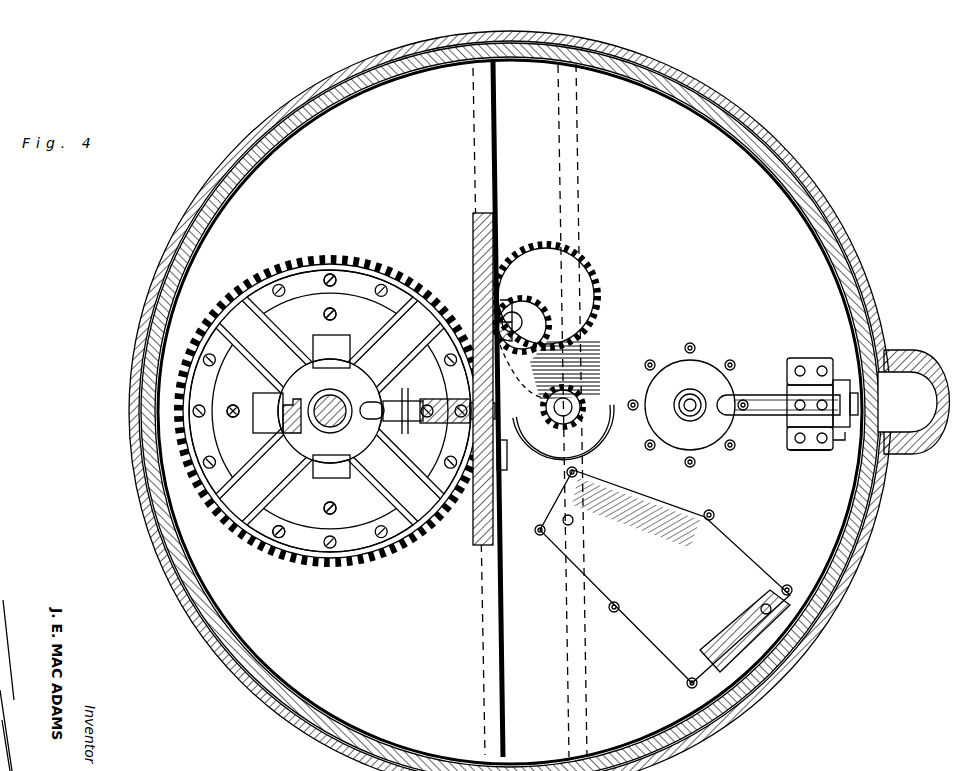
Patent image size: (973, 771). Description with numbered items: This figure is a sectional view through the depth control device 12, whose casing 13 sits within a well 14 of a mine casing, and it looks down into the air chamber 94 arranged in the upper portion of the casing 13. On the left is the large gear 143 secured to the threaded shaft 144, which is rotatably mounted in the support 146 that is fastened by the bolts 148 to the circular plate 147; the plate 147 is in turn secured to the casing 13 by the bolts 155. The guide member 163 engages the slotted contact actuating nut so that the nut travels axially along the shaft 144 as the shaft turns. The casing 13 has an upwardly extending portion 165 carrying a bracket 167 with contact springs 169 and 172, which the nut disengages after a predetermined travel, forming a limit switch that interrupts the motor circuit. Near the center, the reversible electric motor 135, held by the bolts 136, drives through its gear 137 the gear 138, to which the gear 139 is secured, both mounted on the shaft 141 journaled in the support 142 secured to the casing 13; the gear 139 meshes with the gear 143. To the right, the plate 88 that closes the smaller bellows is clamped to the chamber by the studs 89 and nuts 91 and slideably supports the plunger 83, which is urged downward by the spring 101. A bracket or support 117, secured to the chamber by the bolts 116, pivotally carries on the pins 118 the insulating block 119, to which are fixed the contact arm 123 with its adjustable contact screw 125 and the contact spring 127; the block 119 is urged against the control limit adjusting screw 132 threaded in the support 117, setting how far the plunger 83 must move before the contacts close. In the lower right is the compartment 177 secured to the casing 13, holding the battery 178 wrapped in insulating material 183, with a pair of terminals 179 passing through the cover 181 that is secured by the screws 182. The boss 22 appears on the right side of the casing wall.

The depth control device 12 is at (230, 588).
The casing 13 is at (862, 285).
The well 14 is at (914, 394).
The bore in boss 22 is at (905, 430).
The air chamber 94 is at (591, 410).
The gear 143 is at (283, 256).
The circular plate 147 is at (360, 290).
The support 146 is at (330, 411).
The bolts 148 is at (324, 314).
The bolts 155 is at (331, 274).
The threaded shaft 144 is at (322, 404).
The guide member 163 is at (268, 435).
The contact spring 169 is at (368, 402).
The contact spring 172 is at (404, 396).
The bracket 167 is at (455, 402).
The gear 138 is at (586, 290).
The gear 139 is at (522, 310).
The support 142 is at (508, 296).
The shaft 141 is at (520, 325).
The gear 137 is at (598, 384).
The reversible electric motor 135 is at (552, 414).
The bolts 136 is at (507, 450).
The upwardly extending portion 165 is at (494, 220).
The support or plate 88 is at (690, 405).
The plunger 83 is at (700, 398).
The spring 101 is at (692, 397).
The nuts 91 is at (684, 350).
The studs 89 is at (632, 399).
The contact arm 123 is at (760, 416).
The adjustable contact screw 125 is at (744, 400).
The contact spring 127 is at (736, 418).
The insulating block 119 is at (790, 385).
The bolts 116 is at (812, 360).
The control limit adjusting screw 132 is at (838, 380).
The pins 118 is at (828, 448).
The bracket or support 117 is at (812, 452).
The cover 181 is at (665, 576).
The battery 178 is at (735, 650).
The screws 182 is at (566, 476).
The terminals 179 is at (572, 525).
The insulating material 183 is at (782, 591).
The compartment 177 is at (688, 687).